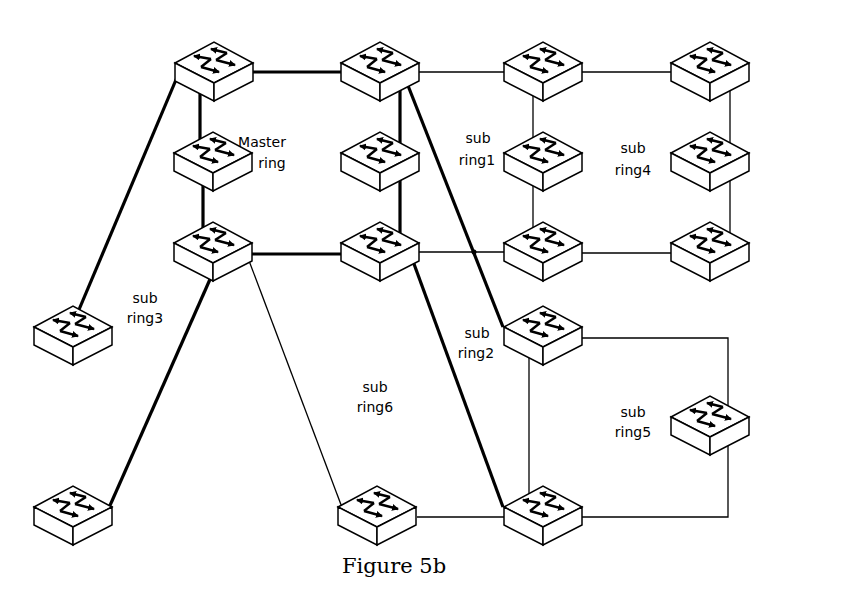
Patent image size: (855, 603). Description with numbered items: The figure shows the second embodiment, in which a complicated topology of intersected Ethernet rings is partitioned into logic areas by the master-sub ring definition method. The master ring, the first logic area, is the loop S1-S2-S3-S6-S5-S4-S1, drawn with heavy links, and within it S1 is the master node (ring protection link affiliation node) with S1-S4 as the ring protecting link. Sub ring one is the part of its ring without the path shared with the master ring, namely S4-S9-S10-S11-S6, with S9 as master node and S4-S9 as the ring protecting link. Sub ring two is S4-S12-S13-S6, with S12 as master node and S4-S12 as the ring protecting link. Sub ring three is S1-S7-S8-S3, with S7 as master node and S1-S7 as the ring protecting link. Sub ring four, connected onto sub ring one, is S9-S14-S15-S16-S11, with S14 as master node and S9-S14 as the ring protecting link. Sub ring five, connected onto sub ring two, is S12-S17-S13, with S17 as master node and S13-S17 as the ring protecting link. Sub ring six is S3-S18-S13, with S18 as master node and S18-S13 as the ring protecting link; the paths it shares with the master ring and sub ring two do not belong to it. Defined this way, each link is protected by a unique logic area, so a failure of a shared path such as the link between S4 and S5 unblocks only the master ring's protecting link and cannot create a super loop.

The master node S1 is at (214, 68).
The node S2 is at (213, 157).
The node S3 is at (213, 248).
The node S4 is at (380, 66).
The node S5 is at (380, 154).
The node S6 is at (380, 246).
The master node S7 is at (73, 332).
The node S8 is at (73, 512).
The master node S9 is at (543, 67).
The node S10 is at (541, 154).
The node S11 is at (542, 247).
The master node S12 is at (543, 332).
The node S13 is at (542, 510).
The master node S14 is at (717, 66).
The node S15 is at (716, 159).
The node S16 is at (716, 248).
The master node S17 is at (718, 423).
The master node S18 is at (377, 510).